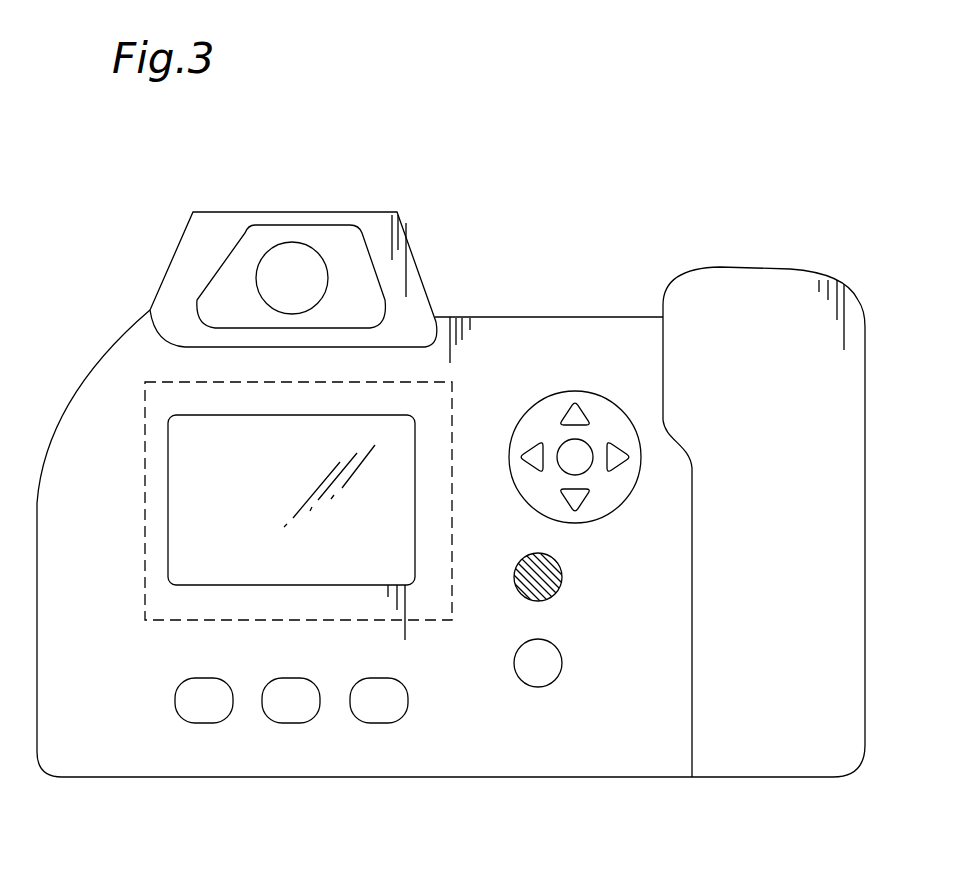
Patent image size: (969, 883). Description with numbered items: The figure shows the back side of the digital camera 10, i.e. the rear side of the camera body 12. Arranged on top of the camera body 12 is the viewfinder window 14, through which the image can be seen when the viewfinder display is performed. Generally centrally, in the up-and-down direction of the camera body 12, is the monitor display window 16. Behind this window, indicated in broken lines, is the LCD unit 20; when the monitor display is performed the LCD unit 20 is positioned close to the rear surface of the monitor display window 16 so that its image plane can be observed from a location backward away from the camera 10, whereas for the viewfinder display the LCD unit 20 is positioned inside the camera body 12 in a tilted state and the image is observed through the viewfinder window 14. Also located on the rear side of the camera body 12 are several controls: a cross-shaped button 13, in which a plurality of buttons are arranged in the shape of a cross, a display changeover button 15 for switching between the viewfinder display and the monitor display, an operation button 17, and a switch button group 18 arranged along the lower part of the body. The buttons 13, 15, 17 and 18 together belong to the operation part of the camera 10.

The camera 10 is at (734, 189).
The camera body 12 is at (594, 317).
The cross-shaped button 13 is at (593, 391).
The viewfinder window 14 is at (292, 263).
The display changeover button 15 is at (562, 577).
The monitor display window 16 is at (189, 493).
The operation button 17 is at (562, 663).
The switch button group 18 is at (415, 795).
The LCD unit 20 is at (452, 403).